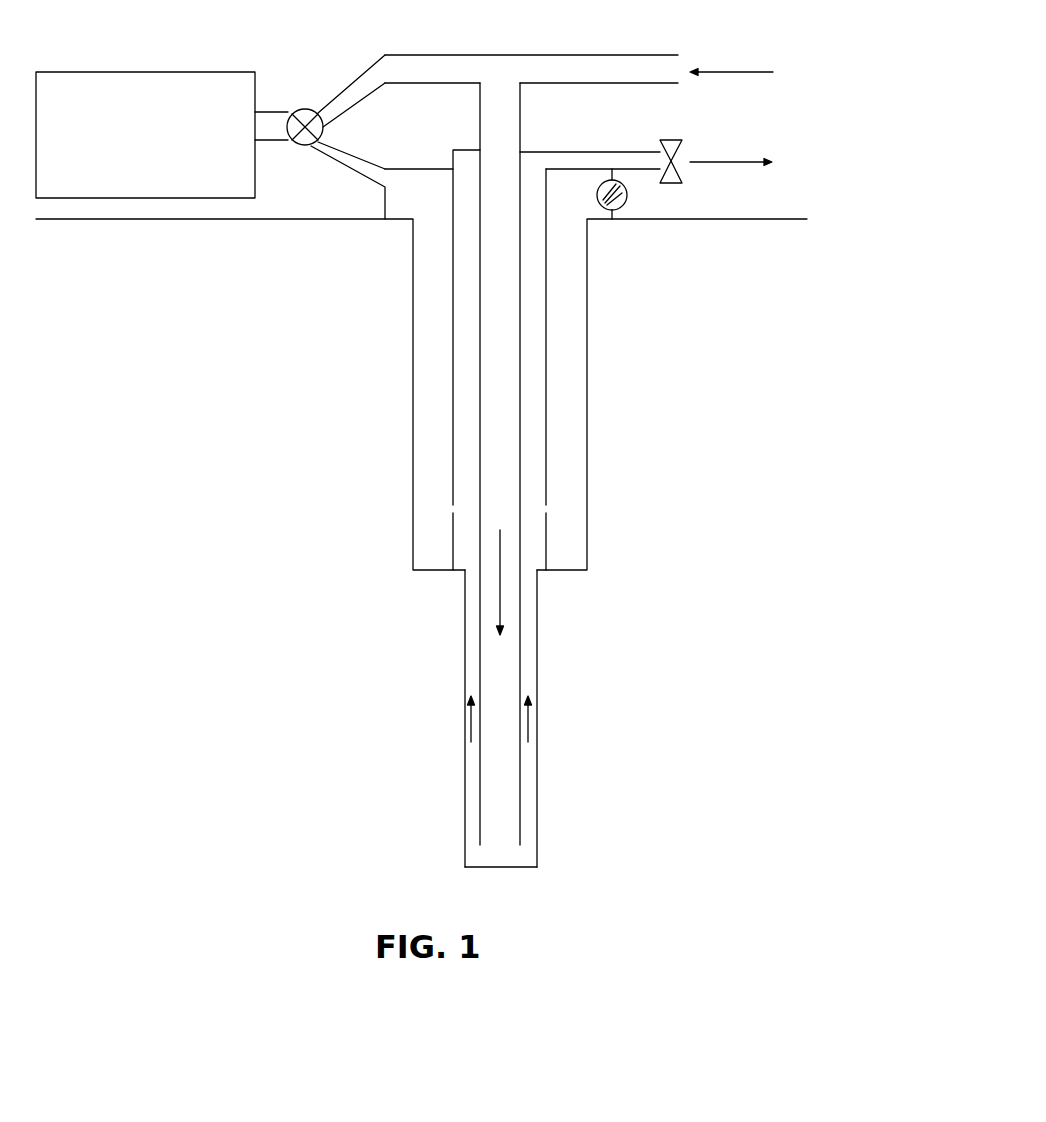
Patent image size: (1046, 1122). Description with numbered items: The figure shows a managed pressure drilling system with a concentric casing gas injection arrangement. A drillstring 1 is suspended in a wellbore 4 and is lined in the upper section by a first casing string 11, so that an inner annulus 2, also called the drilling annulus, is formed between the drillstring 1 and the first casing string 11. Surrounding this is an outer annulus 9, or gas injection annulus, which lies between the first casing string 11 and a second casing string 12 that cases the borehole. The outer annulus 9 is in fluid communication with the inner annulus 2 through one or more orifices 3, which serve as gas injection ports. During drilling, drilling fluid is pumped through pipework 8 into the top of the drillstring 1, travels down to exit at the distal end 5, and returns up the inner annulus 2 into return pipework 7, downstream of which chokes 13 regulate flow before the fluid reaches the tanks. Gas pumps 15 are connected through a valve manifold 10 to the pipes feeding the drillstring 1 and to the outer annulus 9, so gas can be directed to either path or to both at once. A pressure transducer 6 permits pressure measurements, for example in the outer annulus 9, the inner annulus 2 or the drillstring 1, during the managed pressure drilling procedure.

The drillstring 1 is at (522, 405).
The inner annulus 2 is at (535, 456).
The orifices 3 is at (555, 506).
The wellbore 4 is at (541, 679).
The distal end 5 is at (504, 836).
The pressure transducer 6 is at (628, 192).
The return pipework 7 is at (616, 148).
The pipework 8 is at (616, 66).
The outer annulus 9 is at (573, 318).
The valve manifold 10 is at (305, 109).
The first casing string 11 is at (453, 367).
The second casing string 12 is at (413, 462).
The chokes 13 is at (672, 185).
The gas pumps 15 is at (72, 70).